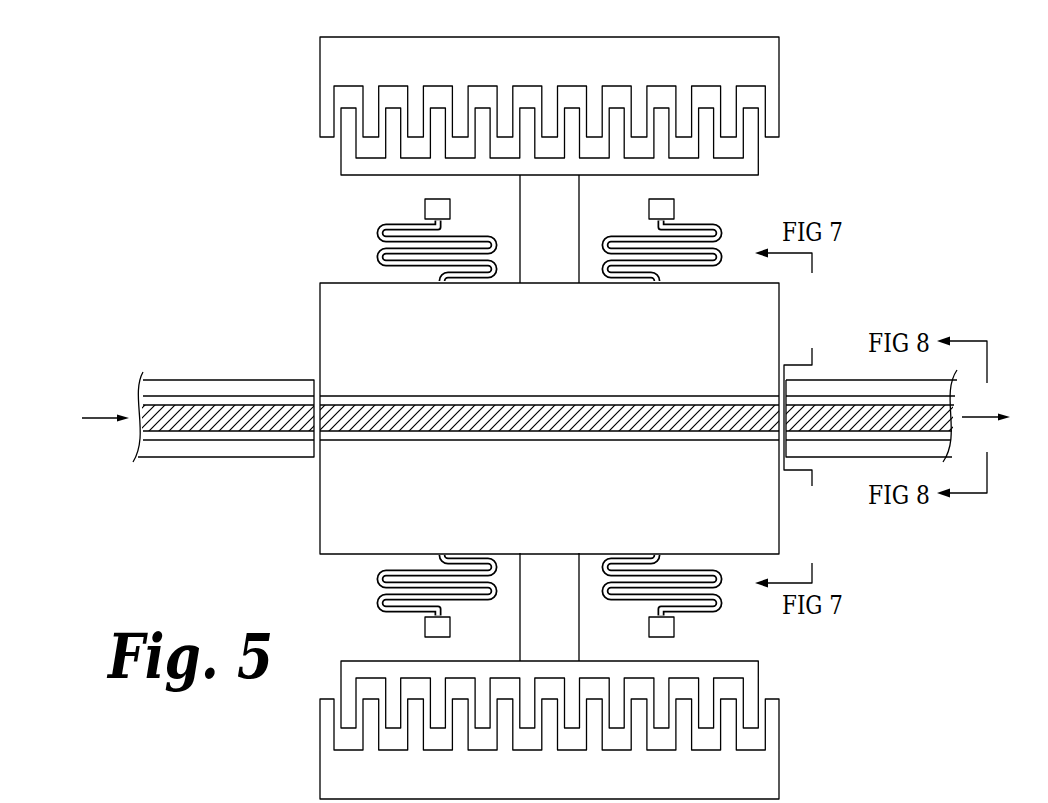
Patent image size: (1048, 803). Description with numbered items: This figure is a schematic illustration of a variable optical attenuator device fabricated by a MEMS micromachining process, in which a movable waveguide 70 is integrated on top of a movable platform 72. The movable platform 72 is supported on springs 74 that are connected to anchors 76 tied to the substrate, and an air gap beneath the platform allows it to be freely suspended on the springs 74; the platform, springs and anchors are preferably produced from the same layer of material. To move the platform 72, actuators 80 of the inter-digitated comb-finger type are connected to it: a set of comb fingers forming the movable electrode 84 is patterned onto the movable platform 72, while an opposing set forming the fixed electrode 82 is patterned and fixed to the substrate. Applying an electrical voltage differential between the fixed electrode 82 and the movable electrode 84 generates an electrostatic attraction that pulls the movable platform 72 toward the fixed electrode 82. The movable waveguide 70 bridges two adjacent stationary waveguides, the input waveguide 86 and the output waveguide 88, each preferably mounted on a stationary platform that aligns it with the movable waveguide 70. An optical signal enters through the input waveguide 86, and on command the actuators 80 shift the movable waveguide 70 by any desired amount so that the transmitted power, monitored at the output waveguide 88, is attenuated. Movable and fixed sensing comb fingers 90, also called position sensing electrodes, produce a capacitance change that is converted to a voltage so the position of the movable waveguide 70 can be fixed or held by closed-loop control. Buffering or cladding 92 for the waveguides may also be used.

The movable waveguide 70 is at (676, 405).
The movable platform 72 is at (590, 360).
The springs 74 is at (383, 233).
The anchors 76 is at (427, 210).
The actuators 80 is at (542, 160).
The fixed electrode 82 is at (779, 107).
The movable electrode 84 is at (758, 155).
The input waveguide 86 is at (222, 441).
The output waveguide 88 is at (847, 432).
The sensing comb fingers 90 is at (759, 683).
The cladding 92 is at (668, 442).